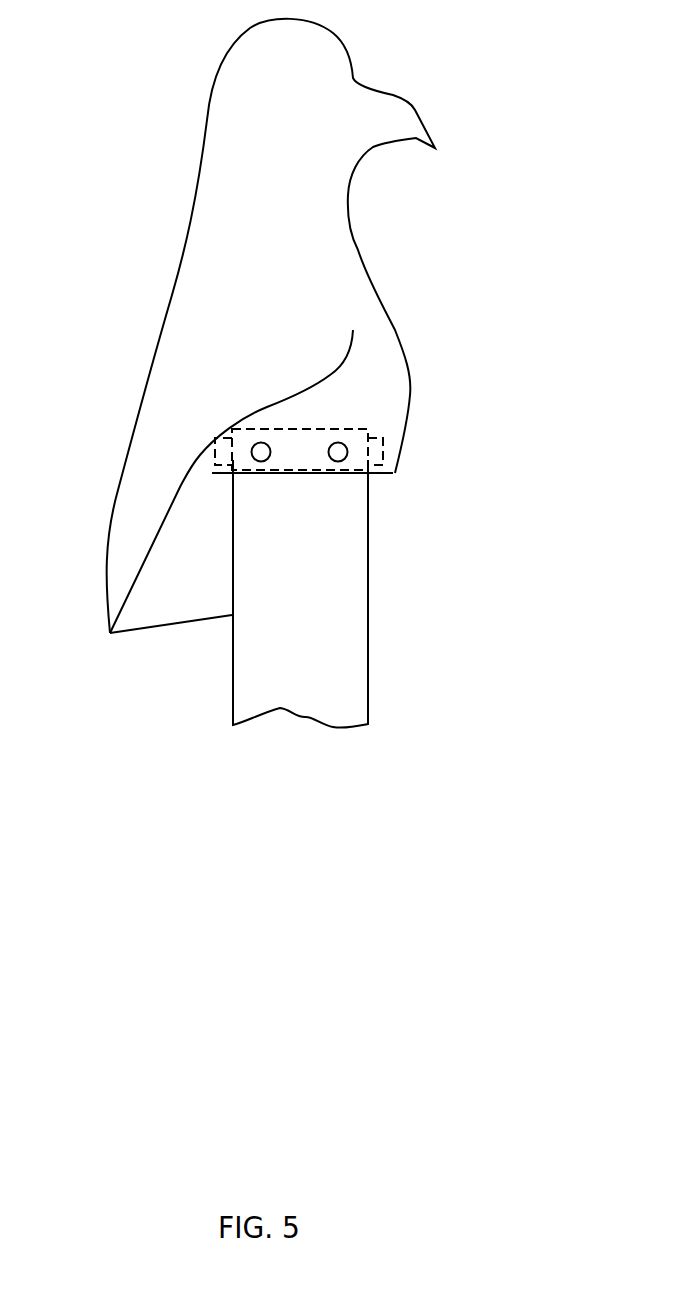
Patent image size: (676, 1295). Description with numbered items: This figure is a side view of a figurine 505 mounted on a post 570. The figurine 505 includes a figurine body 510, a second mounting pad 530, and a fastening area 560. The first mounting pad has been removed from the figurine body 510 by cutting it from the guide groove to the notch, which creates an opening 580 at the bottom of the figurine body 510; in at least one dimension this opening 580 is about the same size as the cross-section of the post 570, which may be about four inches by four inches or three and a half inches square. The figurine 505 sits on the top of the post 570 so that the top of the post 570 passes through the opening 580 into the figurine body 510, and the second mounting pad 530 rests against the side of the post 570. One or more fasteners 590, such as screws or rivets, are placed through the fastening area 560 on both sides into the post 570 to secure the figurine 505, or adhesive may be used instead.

The figurine 505 is at (185, 175).
The figurine body 510 is at (175, 295).
The second mounting pad 530 is at (233, 607).
The fastening area 560 is at (385, 438).
The post 570 is at (317, 428).
The opening 580 is at (358, 477).
The fasteners 590 is at (268, 461).